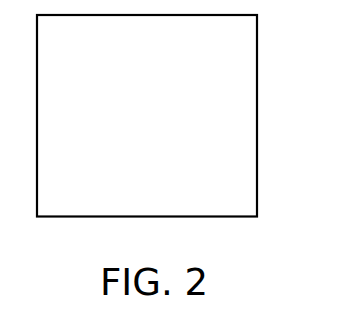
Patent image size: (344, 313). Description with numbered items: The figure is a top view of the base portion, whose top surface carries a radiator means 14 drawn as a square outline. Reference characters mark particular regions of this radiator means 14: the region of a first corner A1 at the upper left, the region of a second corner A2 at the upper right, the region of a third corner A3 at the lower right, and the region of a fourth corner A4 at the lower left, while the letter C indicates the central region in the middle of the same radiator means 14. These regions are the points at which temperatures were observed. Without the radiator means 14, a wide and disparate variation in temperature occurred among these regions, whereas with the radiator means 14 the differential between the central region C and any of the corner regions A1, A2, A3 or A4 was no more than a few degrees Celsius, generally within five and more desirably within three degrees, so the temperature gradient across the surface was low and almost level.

The radiator means 14 is at (247, 114).
The region of a first corner A1 is at (64, 48).
The region of a second corner A2 is at (232, 48).
The region of a third corner A3 is at (234, 207).
The region of a fourth corner A4 is at (63, 207).
The central region C is at (160, 132).